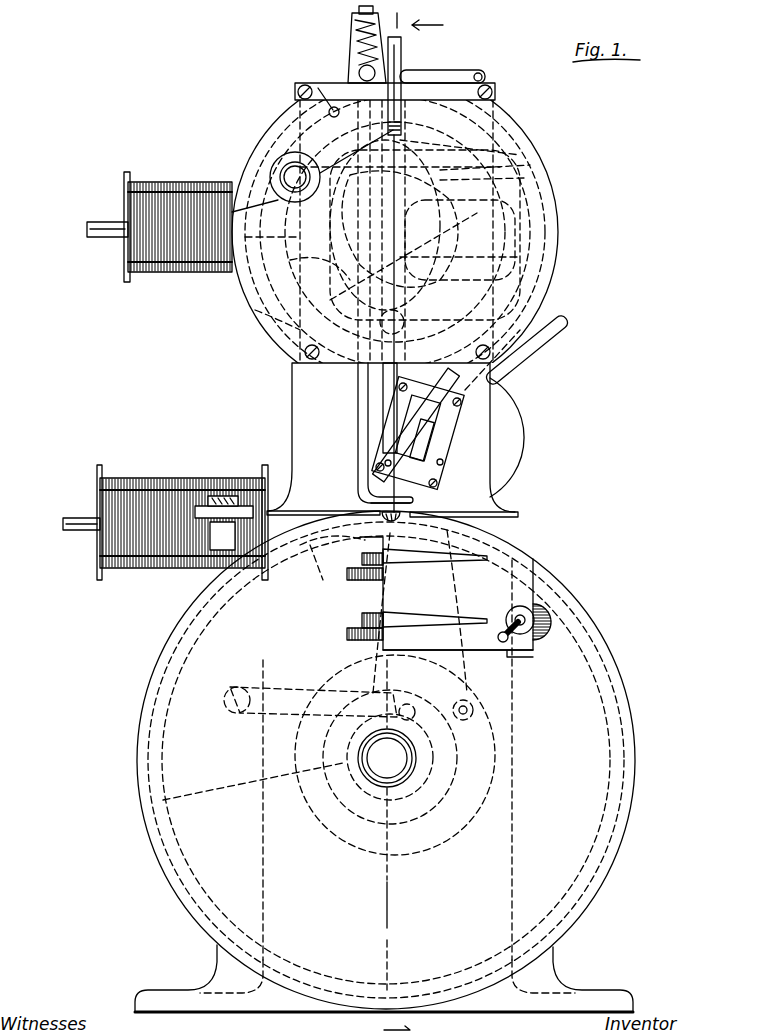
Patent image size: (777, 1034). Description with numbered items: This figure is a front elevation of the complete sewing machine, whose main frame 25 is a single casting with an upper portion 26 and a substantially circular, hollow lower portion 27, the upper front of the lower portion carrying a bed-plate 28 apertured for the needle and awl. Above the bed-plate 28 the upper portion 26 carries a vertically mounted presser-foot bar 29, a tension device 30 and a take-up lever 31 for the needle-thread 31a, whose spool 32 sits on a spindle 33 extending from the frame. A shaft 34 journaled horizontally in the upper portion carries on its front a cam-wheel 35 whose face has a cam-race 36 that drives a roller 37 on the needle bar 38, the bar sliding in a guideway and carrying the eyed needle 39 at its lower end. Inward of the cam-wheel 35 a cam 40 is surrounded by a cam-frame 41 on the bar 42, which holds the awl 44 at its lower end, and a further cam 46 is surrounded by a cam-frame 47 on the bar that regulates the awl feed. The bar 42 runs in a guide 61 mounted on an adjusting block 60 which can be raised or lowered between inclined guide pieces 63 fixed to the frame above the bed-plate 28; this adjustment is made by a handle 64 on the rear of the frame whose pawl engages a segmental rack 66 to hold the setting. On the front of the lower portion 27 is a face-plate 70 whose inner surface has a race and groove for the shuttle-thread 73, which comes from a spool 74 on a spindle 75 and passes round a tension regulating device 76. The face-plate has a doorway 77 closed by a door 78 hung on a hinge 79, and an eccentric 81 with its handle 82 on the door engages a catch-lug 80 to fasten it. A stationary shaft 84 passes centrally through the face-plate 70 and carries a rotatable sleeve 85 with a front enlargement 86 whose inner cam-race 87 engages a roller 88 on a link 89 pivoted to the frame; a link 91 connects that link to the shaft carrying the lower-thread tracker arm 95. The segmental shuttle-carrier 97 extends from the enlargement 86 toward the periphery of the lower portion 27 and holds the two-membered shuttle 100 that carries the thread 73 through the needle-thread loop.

The main frame 25 is at (292, 432).
The upper portion of the frame 26 is at (414, 232).
The lower portion of the frame 27 is at (628, 781).
The bed-plate 28 is at (428, 512).
The presser-foot bar 29 is at (358, 407).
The tension device 30 is at (278, 165).
The take-up lever 31 is at (402, 114).
The needle-thread 31a is at (232, 210).
The spool 32 is at (175, 182).
The spindle 33 is at (104, 222).
The shaft 34 is at (400, 238).
The cam-wheel 35 is at (272, 330).
The cam-race 36 is at (305, 275).
The roller 37 is at (404, 322).
The needle bar 38 is at (368, 383).
The needle 39 is at (375, 488).
The cam 40 is at (480, 260).
The cam-frame 41 is at (545, 258).
The bar 42 is at (435, 381).
The awl 44 is at (437, 476).
The cam 46 is at (420, 145).
The cam-frame 47 is at (480, 162).
The adjusting block 60 is at (445, 420).
The guide 61 is at (447, 447).
The guide pieces 63 is at (382, 461).
The handle 64 is at (536, 357).
The segmental rack 66 is at (507, 437).
The face-plate 70 is at (384, 786).
The shuttle-thread 73 is at (302, 511).
The spool 74 is at (100, 490).
The spindle 75 is at (78, 530).
The tension regulating device 76 is at (185, 568).
The doorway 77 is at (495, 654).
The door 78 is at (503, 575).
The hinge 79 is at (365, 620).
The catch-lug 80 is at (541, 641).
The eccentric 81 is at (512, 607).
The handle 82 is at (505, 630).
The stationary shaft 84 is at (387, 758).
The sleeve 85 is at (375, 802).
The enlargement 86 is at (450, 840).
The cam-race 87 is at (330, 828).
The roller 88 is at (411, 704).
The link 89 is at (465, 722).
The link 91 is at (470, 690).
The lower-thread tracker arm 95 is at (400, 592).
The shuttle-carrier 97 is at (280, 750).
The shuttle 100 is at (342, 540).